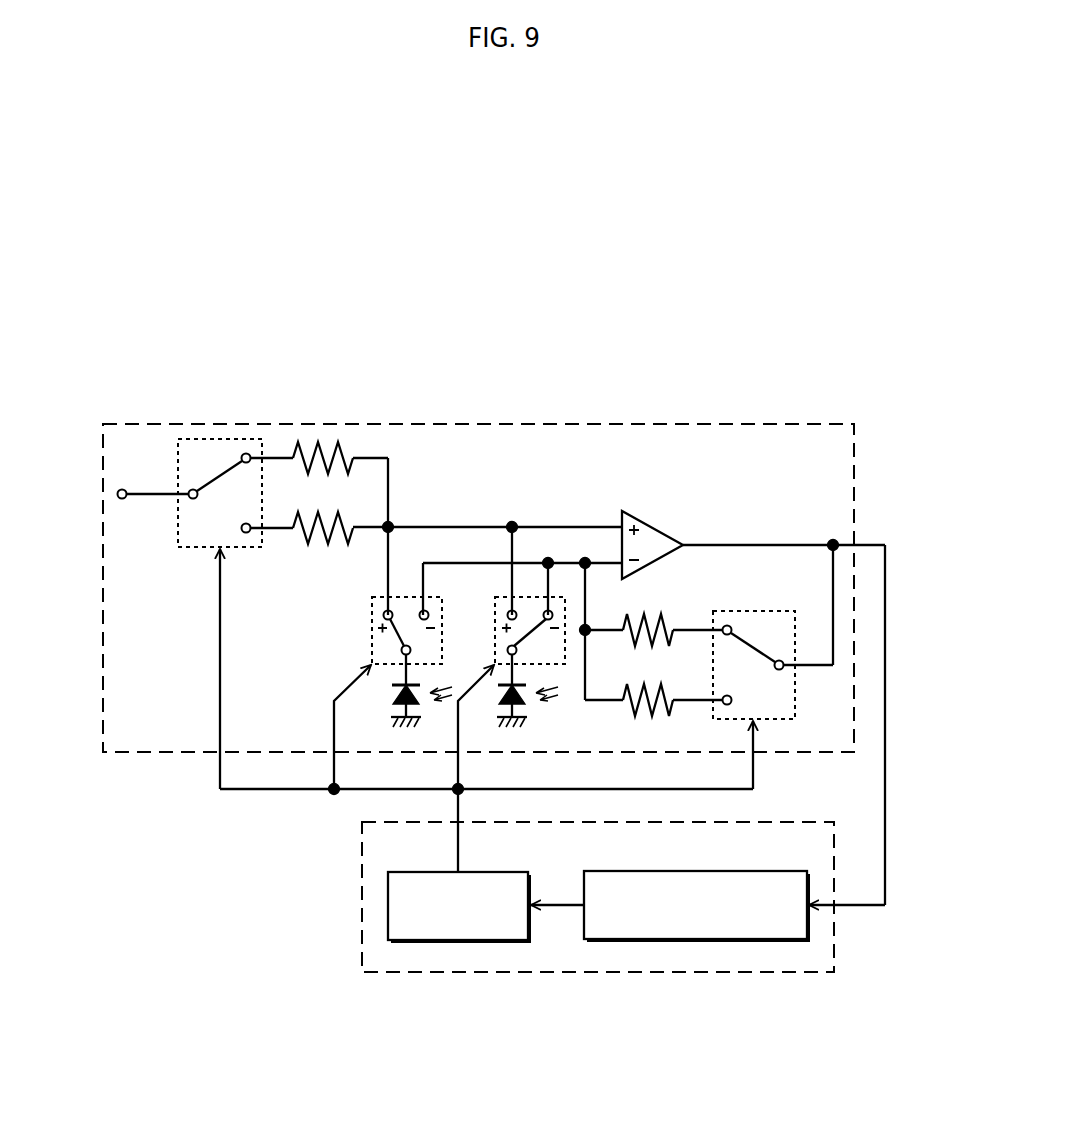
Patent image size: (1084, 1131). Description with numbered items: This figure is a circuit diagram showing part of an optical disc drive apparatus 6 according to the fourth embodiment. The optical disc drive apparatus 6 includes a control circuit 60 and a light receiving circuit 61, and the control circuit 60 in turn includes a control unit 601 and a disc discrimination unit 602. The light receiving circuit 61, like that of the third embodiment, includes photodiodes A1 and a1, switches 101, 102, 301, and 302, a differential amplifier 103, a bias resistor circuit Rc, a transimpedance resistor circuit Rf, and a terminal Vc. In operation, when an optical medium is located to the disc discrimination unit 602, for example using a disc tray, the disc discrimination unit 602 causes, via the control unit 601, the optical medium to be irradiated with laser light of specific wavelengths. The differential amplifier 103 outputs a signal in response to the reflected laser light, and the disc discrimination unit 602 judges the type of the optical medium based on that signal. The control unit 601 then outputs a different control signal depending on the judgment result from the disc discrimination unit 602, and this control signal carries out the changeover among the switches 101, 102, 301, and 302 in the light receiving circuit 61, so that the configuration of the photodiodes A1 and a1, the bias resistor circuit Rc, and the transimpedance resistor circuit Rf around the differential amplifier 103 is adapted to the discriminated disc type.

The optical disc drive apparatus 6 is at (491, 367).
The light receiving circuit 61 is at (823, 424).
The control circuit 60 is at (808, 822).
The switch 302 is at (178, 547).
The switch 301 is at (740, 611).
The switch 101 is at (372, 620).
The switch 102 is at (495, 620).
The differential amplifier 103 is at (650, 523).
The control unit 601 is at (503, 872).
The disc discrimination unit 602 is at (750, 871).
The terminal Vc is at (148, 479).
The bias resistor circuit Rc is at (302, 546).
The transimpedance resistor circuit Rf is at (653, 716).
The photodiode A1 is at (407, 690).
The photodiode a1 is at (522, 690).